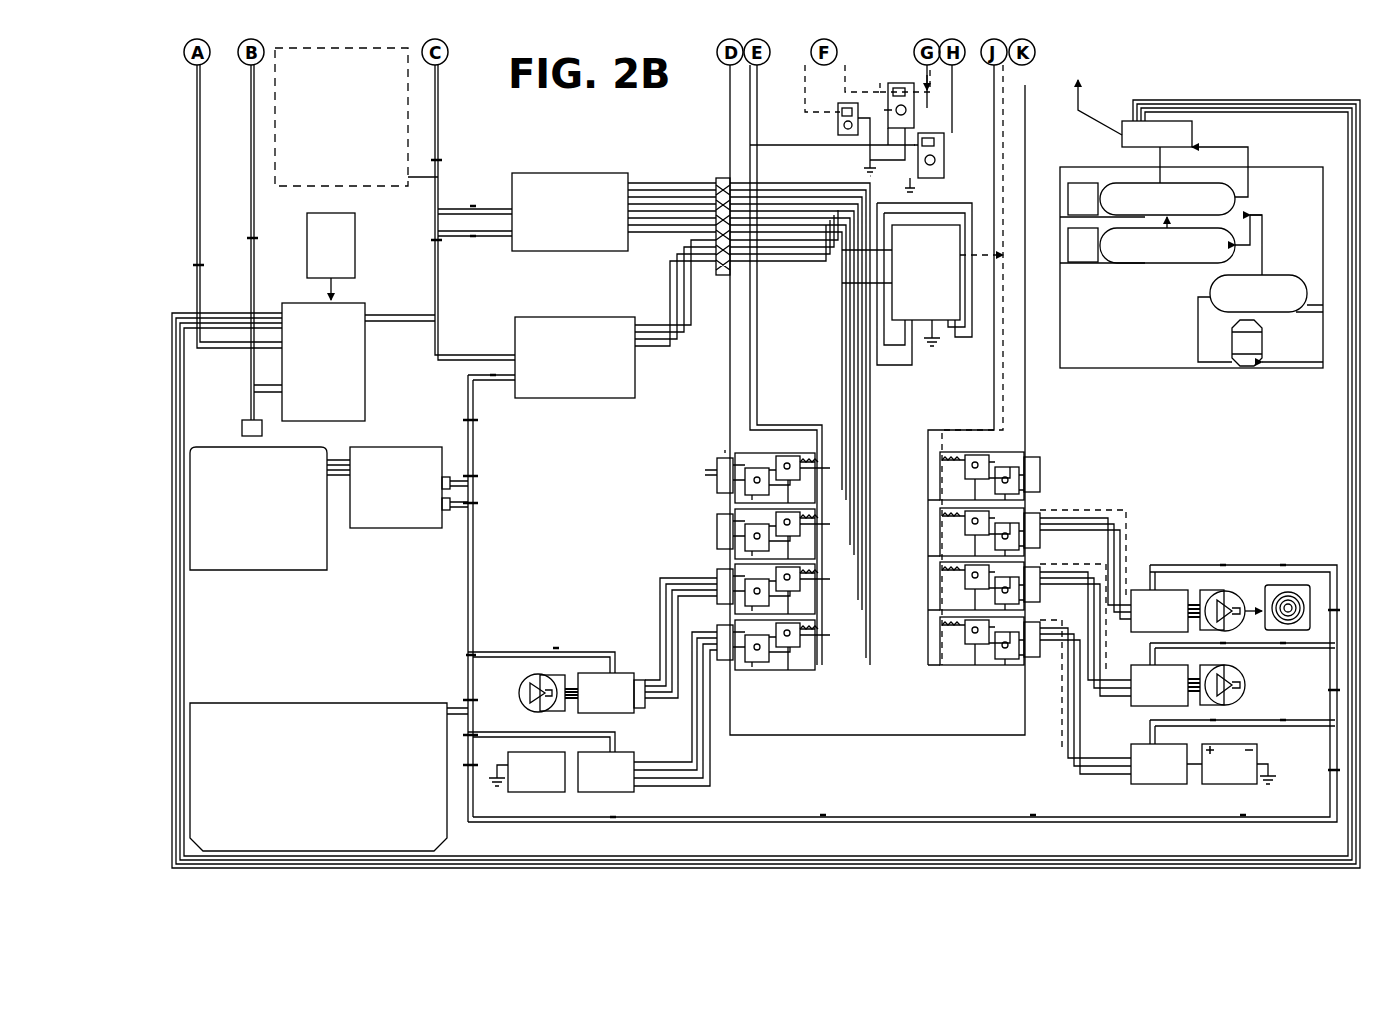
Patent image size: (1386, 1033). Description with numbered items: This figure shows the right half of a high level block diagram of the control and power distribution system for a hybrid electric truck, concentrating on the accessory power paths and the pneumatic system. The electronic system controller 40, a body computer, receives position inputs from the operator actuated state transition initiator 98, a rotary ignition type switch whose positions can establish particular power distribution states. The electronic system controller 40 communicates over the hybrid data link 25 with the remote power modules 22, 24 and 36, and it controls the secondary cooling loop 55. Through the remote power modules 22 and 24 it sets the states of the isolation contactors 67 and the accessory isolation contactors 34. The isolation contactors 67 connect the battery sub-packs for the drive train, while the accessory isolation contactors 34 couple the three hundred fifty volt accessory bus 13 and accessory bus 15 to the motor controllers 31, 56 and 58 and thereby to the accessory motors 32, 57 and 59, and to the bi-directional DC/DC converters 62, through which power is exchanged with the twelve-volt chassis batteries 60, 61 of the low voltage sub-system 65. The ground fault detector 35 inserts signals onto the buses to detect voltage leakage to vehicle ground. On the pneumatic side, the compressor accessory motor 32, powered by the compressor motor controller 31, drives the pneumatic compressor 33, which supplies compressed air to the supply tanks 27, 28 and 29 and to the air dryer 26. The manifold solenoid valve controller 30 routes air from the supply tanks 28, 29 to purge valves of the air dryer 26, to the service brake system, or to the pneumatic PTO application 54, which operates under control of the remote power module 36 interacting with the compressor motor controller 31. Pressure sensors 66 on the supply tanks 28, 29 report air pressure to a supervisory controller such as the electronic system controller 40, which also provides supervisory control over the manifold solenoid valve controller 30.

The accessory bus 13 is at (755, 390).
The accessory bus 15 is at (1005, 355).
The remote power module 22 is at (575, 185).
The remote power module 24 is at (565, 330).
The hybrid data link 25 is at (470, 440).
The air dryer 26 is at (1260, 338).
The compressed air supply tank 27 is at (1240, 300).
The compressed air supply tank 28 is at (1240, 193).
The compressed air supply tank 29 is at (1195, 252).
The manifold solenoid valve controller 30 is at (1195, 128).
The compressor motor controller 31 is at (1140, 603).
The compressor accessory motor 32 is at (1225, 600).
The pneumatic compressor 33 is at (1285, 585).
The accessory isolation contactors 34 is at (660, 532).
The ground fault detector 35 is at (940, 284).
The remote power module 36 is at (415, 515).
The electronic system controller 40 is at (352, 376).
The pneumatic PTO application 54 is at (277, 552).
The secondary cooling loop 55 is at (300, 718).
The motor controller 56 is at (1140, 695).
The accessory motor 57 is at (1246, 690).
The motor controller 58 is at (614, 670).
The accessory motor 59 is at (525, 675).
The chassis battery 60 is at (548, 780).
The chassis battery 61 is at (1235, 780).
The bi-directional DC/DC converter 62 is at (628, 783).
The low voltage sub-system 65 is at (862, 815).
The pressure sensors 66 is at (1082, 200).
The isolation contactors 67 is at (835, 128).
The state transition initiator 98 is at (345, 243).